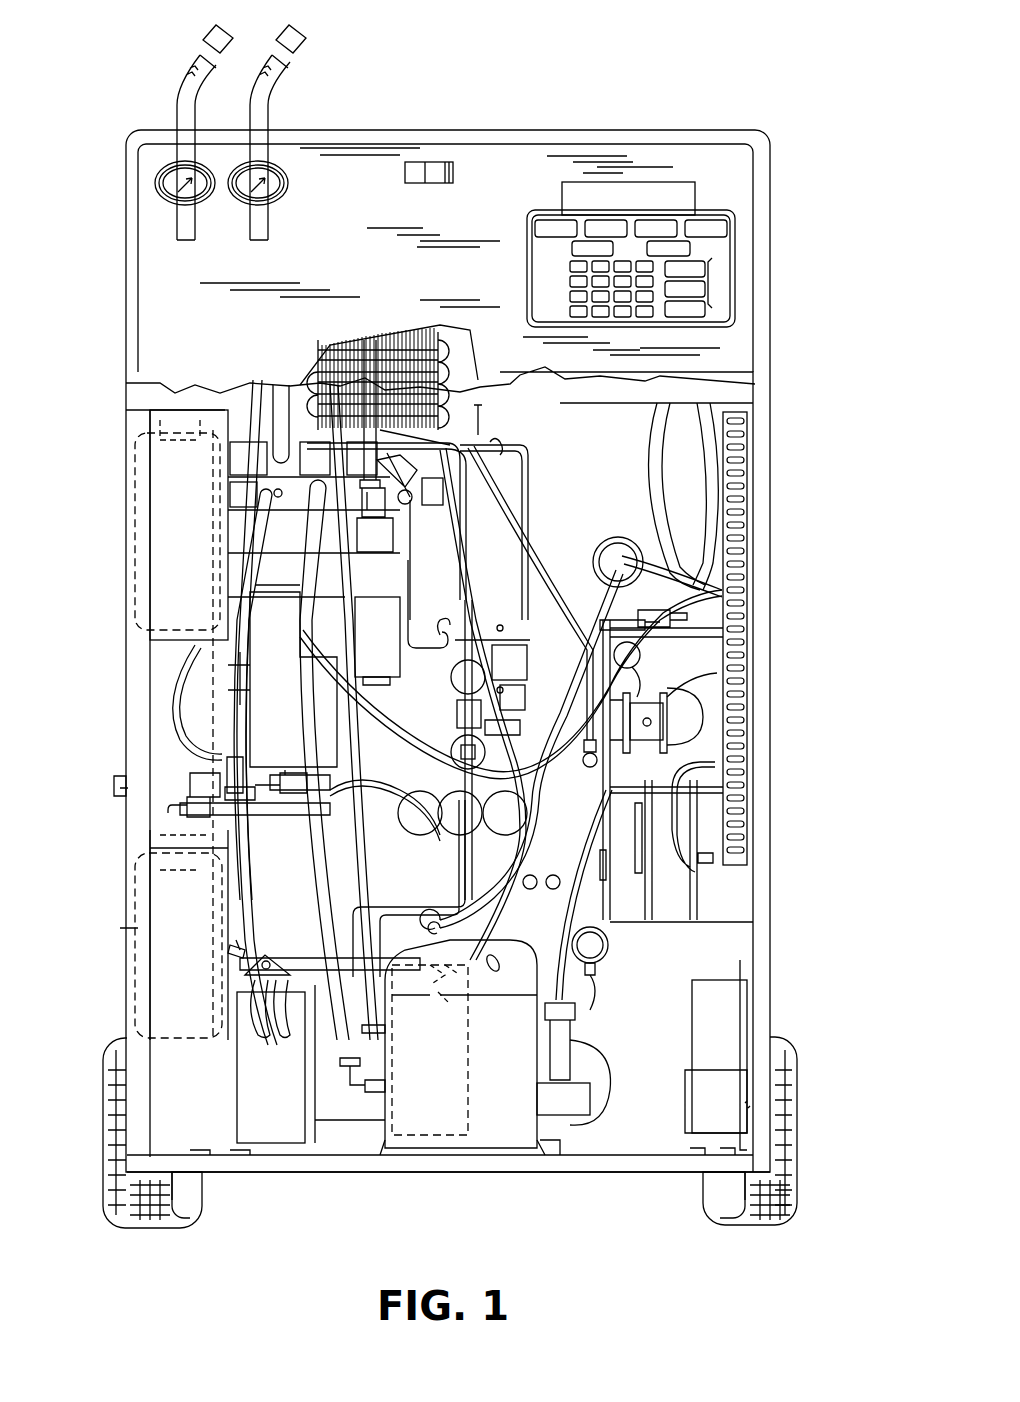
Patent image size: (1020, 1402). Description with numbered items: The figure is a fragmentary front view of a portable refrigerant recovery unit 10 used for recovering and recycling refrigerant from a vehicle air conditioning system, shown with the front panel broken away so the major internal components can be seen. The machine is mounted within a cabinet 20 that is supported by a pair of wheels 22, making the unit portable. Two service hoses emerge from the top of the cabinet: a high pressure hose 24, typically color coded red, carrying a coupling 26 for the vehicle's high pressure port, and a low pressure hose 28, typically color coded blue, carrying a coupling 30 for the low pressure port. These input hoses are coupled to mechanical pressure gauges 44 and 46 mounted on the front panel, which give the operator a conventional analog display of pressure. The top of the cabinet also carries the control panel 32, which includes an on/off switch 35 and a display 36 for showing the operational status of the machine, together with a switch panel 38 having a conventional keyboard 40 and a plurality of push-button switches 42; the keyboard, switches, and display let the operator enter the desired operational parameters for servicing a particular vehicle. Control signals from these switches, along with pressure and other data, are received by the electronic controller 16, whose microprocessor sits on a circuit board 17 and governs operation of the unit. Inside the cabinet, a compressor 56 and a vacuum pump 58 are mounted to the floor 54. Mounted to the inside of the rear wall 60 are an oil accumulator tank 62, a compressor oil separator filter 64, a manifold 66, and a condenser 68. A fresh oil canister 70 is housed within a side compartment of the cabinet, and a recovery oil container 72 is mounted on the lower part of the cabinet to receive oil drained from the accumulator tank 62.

The refrigerant recovery unit 10 is at (646, 100).
The electronic controller 16 is at (686, 665).
The circuit board 17 is at (700, 900).
The cabinet 20 is at (727, 122).
The wheels 22 is at (792, 1045).
The high pressure hose 24 is at (272, 98).
The coupling 26 is at (306, 40).
The low pressure hose 28 is at (180, 88).
The coupling 30 is at (207, 33).
The control panel 32 is at (480, 162).
The on/off switch 35 is at (420, 168).
The display 36 is at (690, 185).
The switch panel 38 is at (715, 250).
The keyboard 40 is at (655, 318).
The push-button switches 42 is at (598, 225).
The mechanical pressure gauge 44 is at (290, 200).
The mechanical pressure gauge 46 is at (200, 205).
The floor 54 is at (640, 1135).
The compressor 56 is at (510, 1125).
The vacuum pump 58 is at (330, 1125).
The rear wall 60 is at (598, 512).
The oil accumulator tank 62 is at (338, 750).
The compressor oil separator filter 64 is at (403, 660).
The manifold 66 is at (352, 505).
The condenser 68 is at (478, 395).
The fresh oil canister 70 is at (130, 505).
The recovery oil container 72 is at (130, 930).